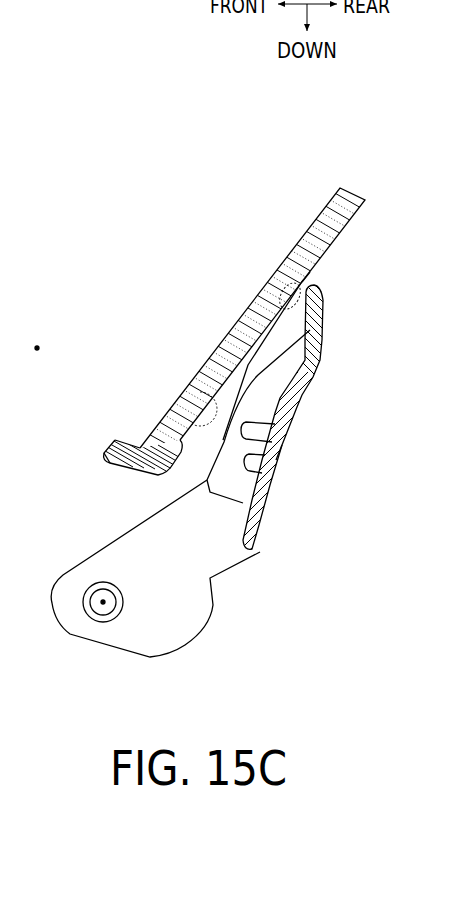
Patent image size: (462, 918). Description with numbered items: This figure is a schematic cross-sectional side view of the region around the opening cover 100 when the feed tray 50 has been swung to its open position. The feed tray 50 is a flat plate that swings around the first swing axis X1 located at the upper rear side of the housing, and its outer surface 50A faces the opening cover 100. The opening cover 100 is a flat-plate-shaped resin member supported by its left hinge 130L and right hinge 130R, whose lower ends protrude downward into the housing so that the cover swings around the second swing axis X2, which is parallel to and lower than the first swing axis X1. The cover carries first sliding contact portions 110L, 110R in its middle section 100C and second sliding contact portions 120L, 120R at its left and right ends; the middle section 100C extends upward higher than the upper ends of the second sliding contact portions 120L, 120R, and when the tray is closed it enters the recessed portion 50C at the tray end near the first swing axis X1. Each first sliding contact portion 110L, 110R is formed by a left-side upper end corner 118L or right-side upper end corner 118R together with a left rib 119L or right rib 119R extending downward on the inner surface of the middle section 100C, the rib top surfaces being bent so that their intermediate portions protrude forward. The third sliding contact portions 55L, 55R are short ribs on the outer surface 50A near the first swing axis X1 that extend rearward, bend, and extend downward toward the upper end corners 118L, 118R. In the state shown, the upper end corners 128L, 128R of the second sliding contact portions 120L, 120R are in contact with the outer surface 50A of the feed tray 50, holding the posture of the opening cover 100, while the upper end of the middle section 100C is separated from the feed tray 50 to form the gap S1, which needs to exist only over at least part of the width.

The feed tray 50 is at (358, 210).
The outer surface 50A is at (170, 413).
The recessed portion 50C is at (102, 458).
The third sliding contact portion 55L is at (120, 463).
The third sliding contact portion 55R is at (120, 463).
The opening cover 100 is at (254, 428).
The middle section 100C is at (326, 312).
The first sliding contact portion 110L is at (334, 421).
The first sliding contact portion 110R is at (270, 385).
The left-side upper end corner 118L is at (271, 243).
The right-side upper end corner 118R is at (273, 330).
The left rib 119L is at (343, 479).
The right rib 119R is at (290, 432).
The second sliding contact portion 120L is at (201, 323).
The second sliding contact portion 120R is at (265, 286).
The upper end corner 128L is at (186, 380).
The upper end corner 128R is at (262, 340).
The left hinge 130L is at (155, 592).
The right hinge 130R is at (155, 592).
The gap S1 is at (314, 274).
The first swing axis X1 is at (37, 350).
The second swing axis X2 is at (103, 604).